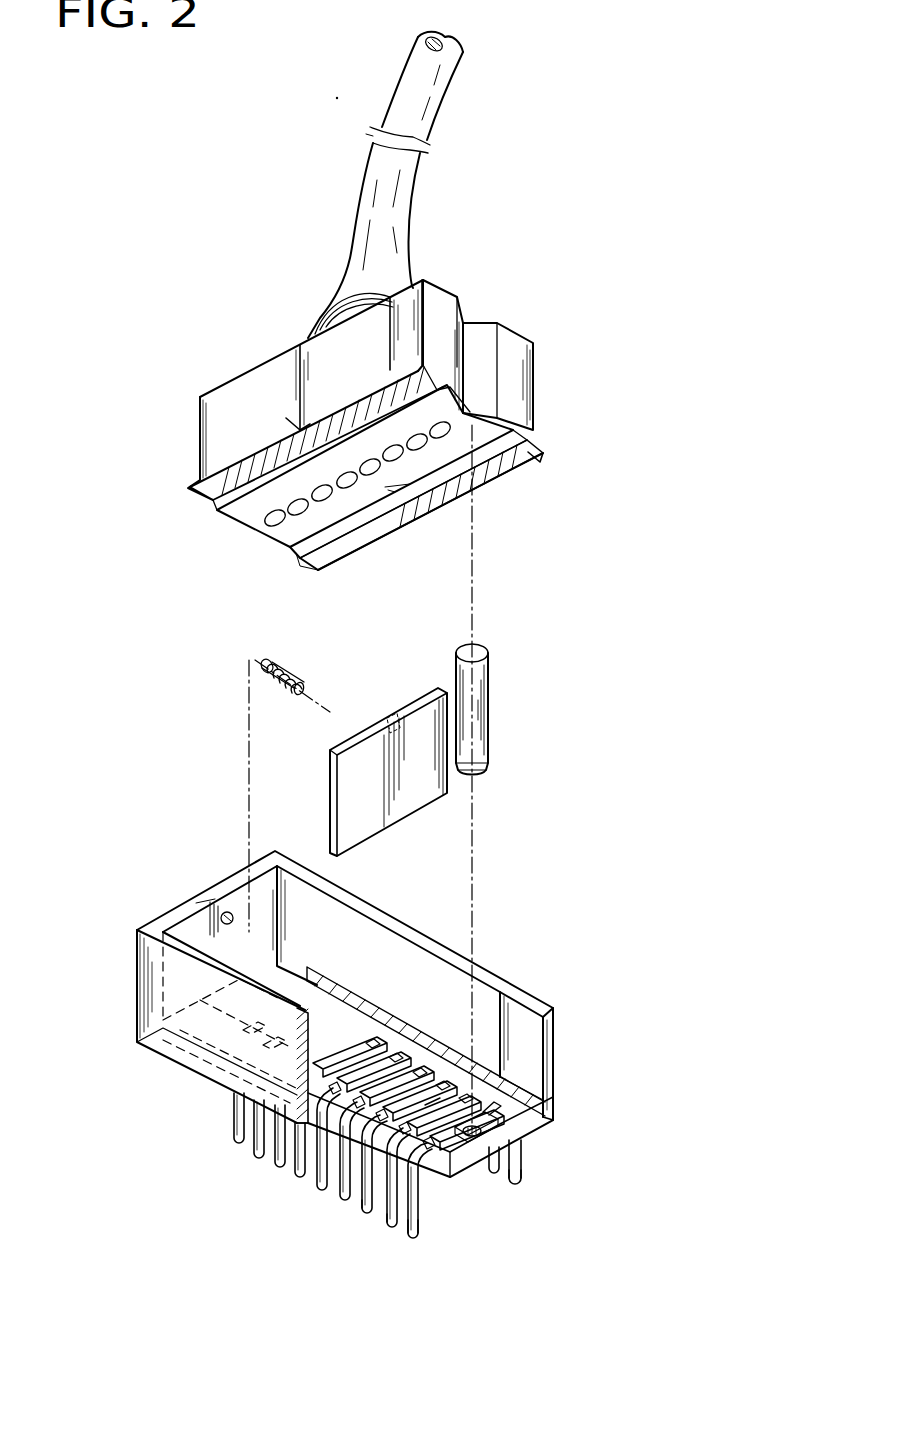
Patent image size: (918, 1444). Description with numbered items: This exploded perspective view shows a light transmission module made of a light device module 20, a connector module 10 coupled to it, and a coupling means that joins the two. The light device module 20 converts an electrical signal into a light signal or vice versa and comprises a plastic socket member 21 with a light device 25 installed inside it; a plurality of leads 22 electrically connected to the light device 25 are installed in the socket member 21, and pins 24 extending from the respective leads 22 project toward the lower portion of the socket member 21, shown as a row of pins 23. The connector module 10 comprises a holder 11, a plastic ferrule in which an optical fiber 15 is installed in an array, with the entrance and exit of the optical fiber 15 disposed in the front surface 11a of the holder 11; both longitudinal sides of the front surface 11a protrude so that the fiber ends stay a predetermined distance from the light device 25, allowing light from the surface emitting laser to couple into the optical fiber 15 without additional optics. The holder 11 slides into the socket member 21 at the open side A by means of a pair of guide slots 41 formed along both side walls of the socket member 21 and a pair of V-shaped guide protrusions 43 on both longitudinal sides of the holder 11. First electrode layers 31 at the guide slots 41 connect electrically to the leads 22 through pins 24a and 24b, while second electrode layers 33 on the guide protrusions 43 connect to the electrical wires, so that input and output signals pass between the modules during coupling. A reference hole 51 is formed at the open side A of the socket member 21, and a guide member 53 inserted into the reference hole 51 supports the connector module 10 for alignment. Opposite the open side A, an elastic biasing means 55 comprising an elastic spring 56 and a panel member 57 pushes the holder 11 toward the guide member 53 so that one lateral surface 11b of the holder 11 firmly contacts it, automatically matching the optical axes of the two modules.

The connector module 10 is at (186, 422).
The holder 11 is at (216, 438).
The front surface of the holder 11a is at (297, 528).
The lateral surface of the holder 11b is at (483, 377).
The optical fiber 15 is at (275, 518).
The second electrode layers 33 is at (288, 430).
The guide protrusions 43 is at (294, 426).
The elastic biasing means 55 is at (240, 646).
The elastic spring 56 is at (292, 668).
The panel member 57 is at (412, 797).
The guide member 53 is at (482, 713).
The light device module 20 is at (122, 972).
The socket member 21 is at (145, 1040).
The leads 22 is at (420, 1163).
The contact terminal pins 23 is at (365, 1218).
The pins 24 is at (333, 1195).
The pin 24a is at (412, 1240).
The pin 24b is at (545, 1185).
The light device 25 is at (437, 1110).
The first electrode layers 31 is at (303, 1150).
The guide slots 41 is at (270, 1130).
The reference hole 51 is at (505, 1130).
The open side A is at (510, 1122).